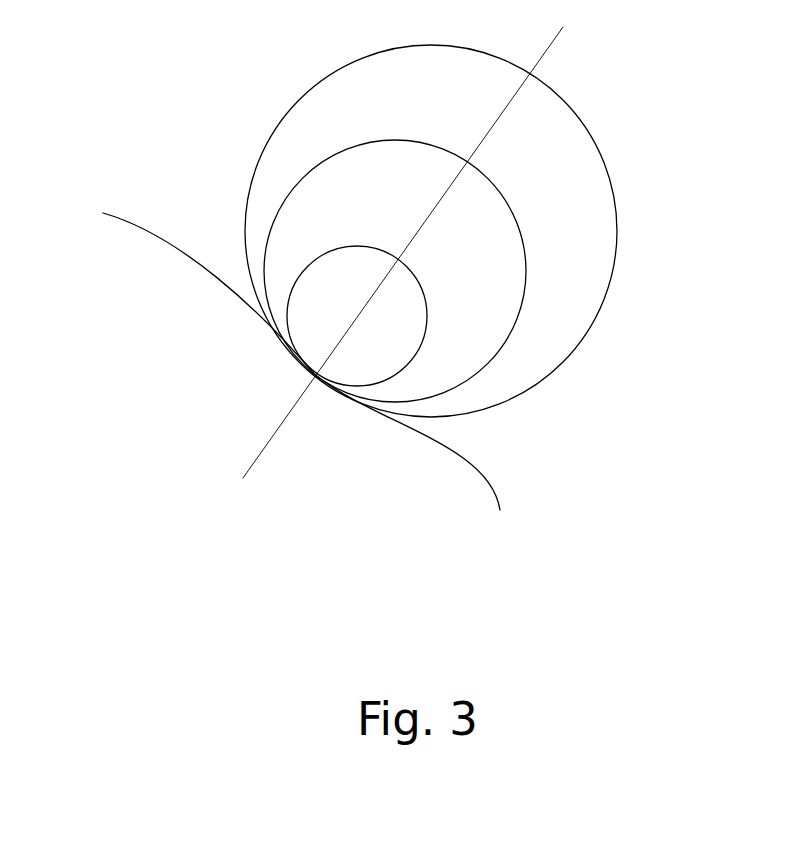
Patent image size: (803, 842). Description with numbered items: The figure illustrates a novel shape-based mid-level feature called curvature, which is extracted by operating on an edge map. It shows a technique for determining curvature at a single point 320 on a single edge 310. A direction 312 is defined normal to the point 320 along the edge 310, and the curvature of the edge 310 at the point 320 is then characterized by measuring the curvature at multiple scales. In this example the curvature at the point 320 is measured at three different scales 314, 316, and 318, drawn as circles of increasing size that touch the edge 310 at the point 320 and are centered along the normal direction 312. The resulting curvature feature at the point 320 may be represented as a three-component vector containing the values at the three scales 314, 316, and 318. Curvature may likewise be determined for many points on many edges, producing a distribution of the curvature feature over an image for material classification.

The edge 310 is at (137, 223).
The direction 312 is at (543, 53).
The scale 314 is at (427, 317).
The scale 316 is at (526, 273).
The scale 318 is at (617, 230).
The point 320 is at (315, 377).